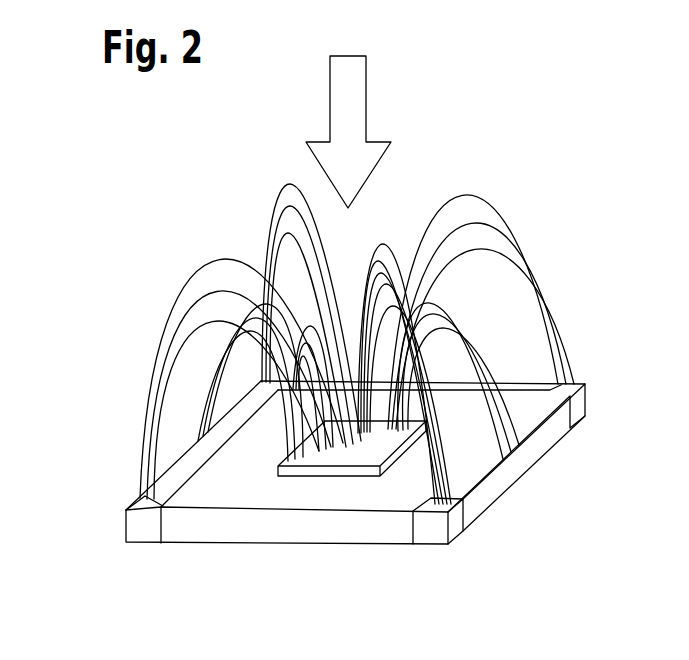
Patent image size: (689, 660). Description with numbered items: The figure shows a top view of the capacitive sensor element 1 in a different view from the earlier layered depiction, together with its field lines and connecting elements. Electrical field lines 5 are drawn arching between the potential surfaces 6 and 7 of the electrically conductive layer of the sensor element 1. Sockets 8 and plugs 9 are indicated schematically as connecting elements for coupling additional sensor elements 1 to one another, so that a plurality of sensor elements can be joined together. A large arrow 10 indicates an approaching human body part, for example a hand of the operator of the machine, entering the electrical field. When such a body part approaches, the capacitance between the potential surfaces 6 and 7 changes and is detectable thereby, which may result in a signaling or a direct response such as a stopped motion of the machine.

The capacitive sensor element 1 is at (99, 474).
The electrical field lines 5 is at (282, 176).
The potential surface 6 is at (274, 518).
The potential surface 7 is at (347, 451).
The socket 8 is at (142, 517).
The plug 9 is at (431, 518).
The arrow 10 is at (345, 88).